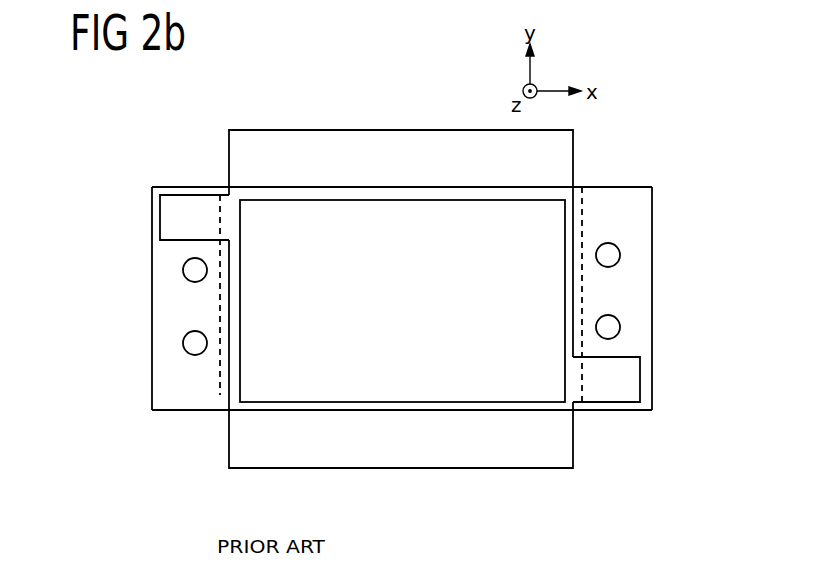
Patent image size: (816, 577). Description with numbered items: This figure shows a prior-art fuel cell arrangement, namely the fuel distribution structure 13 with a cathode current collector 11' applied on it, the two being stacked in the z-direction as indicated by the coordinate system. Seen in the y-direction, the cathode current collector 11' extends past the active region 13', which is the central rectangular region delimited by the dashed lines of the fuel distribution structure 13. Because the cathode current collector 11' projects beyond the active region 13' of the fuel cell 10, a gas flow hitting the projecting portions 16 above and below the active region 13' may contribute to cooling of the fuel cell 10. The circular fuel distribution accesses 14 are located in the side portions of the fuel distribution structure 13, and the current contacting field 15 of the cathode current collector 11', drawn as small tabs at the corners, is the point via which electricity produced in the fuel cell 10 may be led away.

The fuel cell 10 is at (142, 297).
The cathode current collector 11' is at (398, 146).
The fuel distribution structure 13 is at (400, 302).
The active region 13' is at (402, 301).
The fuel distribution accesses 14 is at (184, 345).
The current contacting field 15 is at (178, 213).
The conductor strips 16 is at (402, 134).